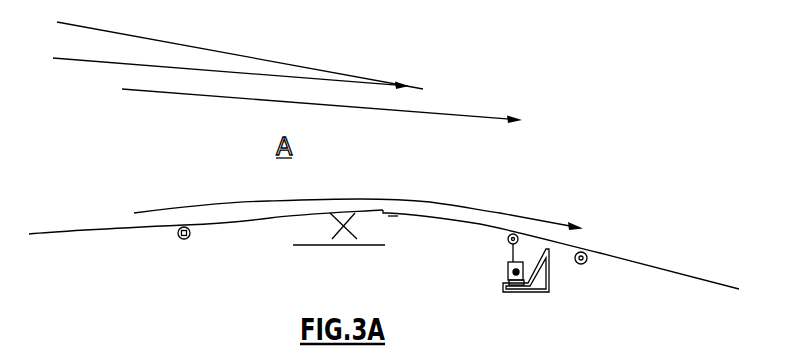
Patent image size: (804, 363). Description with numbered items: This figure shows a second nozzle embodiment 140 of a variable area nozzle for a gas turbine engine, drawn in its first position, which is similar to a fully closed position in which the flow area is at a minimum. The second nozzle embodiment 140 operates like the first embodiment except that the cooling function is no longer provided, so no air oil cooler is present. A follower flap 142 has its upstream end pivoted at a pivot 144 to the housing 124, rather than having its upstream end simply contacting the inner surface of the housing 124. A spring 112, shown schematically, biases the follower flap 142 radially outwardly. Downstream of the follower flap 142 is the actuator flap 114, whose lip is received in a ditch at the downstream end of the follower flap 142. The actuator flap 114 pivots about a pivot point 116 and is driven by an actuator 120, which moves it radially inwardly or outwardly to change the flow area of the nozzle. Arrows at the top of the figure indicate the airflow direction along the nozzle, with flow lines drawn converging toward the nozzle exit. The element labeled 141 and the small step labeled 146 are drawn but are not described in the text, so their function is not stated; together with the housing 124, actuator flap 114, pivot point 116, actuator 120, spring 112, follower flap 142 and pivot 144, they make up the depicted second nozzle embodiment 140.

The spring 112 is at (335, 224).
The actuator flap 114 is at (661, 268).
The pivot point 116 is at (583, 265).
The actuator 120 is at (490, 266).
The housing 124 is at (91, 233).
The second nozzle embodiment 140 is at (678, 107).
The air flow streamlines 141 is at (328, 71).
The follower flap 142 is at (225, 222).
The pivot 144 is at (182, 240).
The tab 146 is at (393, 216).